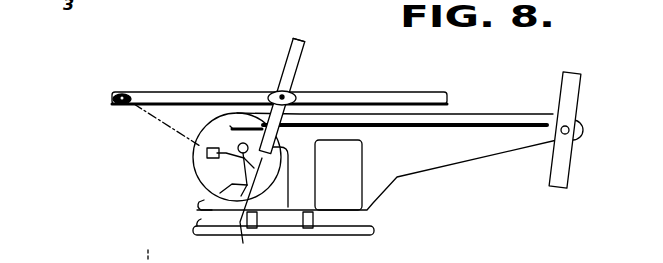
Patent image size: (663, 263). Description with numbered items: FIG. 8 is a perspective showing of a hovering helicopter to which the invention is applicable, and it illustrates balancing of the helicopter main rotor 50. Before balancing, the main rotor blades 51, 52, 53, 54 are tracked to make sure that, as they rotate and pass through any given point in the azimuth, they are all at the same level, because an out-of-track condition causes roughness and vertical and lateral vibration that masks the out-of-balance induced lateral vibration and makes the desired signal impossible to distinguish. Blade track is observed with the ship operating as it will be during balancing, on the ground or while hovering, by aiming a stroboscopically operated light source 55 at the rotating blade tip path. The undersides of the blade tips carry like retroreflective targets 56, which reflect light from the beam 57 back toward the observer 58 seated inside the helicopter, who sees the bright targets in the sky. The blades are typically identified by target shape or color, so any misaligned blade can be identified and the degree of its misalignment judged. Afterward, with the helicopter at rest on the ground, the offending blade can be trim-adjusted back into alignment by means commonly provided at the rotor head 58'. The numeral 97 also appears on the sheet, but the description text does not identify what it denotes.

The main rotor 50 is at (272, 85).
The main rotor blade 51 is at (163, 91).
The main rotor blade 52 is at (305, 45).
The main rotor blade 53 is at (432, 92).
The main rotor blade 54 is at (292, 147).
The stroboscopically operated light source 55 is at (214, 151).
The retroreflective target 56 is at (112, 95).
The beam 57 is at (157, 115).
The observer 58 is at (249, 210).
The rotor head 58' is at (317, 71).
The support line 97 is at (125, 258).